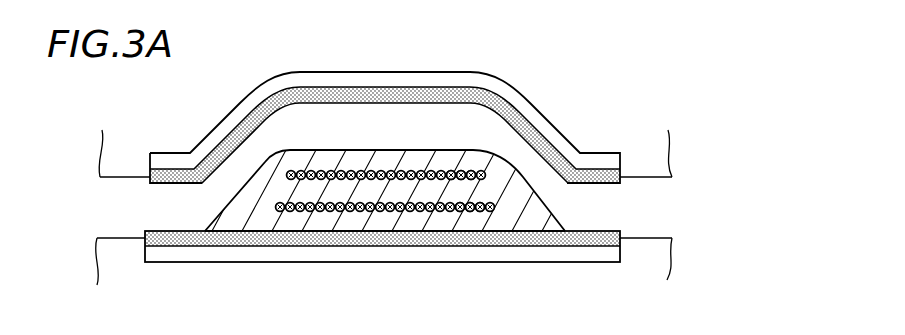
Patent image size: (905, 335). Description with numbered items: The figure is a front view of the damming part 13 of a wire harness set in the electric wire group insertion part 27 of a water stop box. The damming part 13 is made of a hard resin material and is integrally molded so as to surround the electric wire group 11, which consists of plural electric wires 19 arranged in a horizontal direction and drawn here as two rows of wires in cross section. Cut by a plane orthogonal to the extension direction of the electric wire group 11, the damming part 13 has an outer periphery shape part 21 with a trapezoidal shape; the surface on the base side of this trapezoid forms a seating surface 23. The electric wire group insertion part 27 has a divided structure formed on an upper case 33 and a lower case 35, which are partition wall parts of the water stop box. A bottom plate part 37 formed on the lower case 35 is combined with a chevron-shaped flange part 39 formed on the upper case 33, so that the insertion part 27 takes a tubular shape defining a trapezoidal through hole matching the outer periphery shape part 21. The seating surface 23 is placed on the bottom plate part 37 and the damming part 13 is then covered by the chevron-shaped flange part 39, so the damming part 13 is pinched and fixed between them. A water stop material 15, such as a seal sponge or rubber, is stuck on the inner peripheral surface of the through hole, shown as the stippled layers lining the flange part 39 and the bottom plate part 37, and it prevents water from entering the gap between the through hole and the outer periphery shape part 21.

The electric wire group 11 is at (339, 166).
The damming part 13 is at (507, 154).
The water stop material 15 is at (173, 184).
The electric wires 19 is at (475, 170).
The outer periphery shape part 21 is at (387, 150).
The seating surface 23 is at (405, 232).
The electric wire group insertion part 27 is at (449, 176).
The upper case 33 is at (123, 153).
The lower case 35 is at (118, 262).
The bottom plate part 37 is at (592, 252).
The chevron-shaped flange part 39 is at (588, 163).